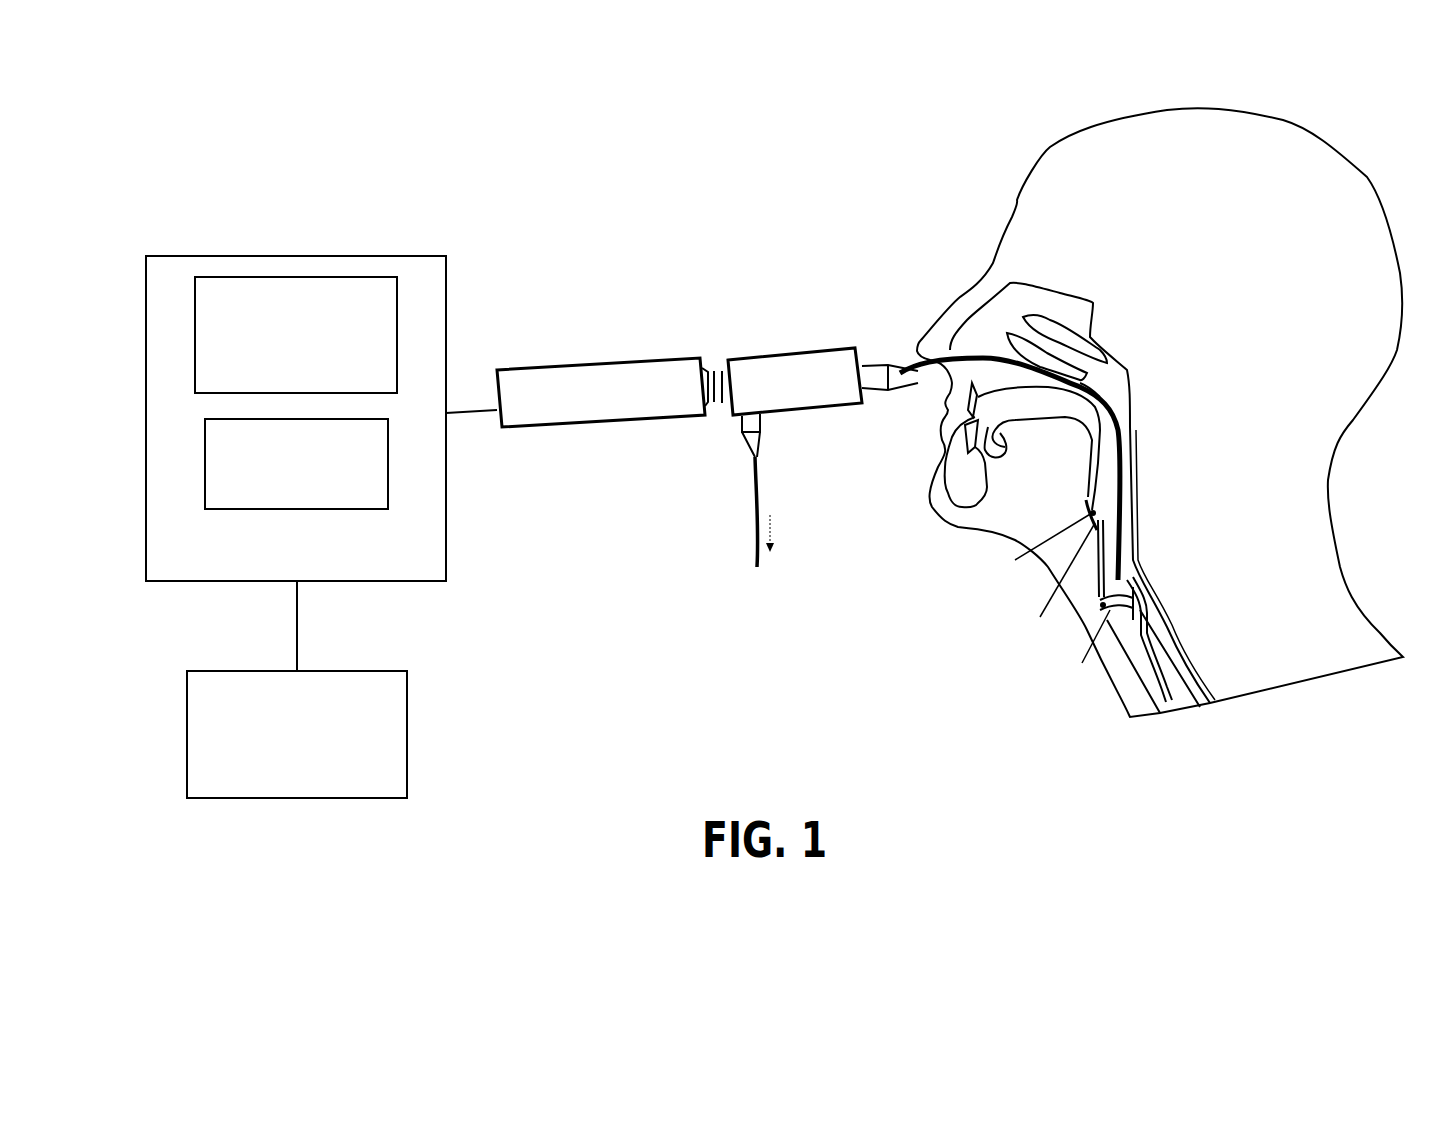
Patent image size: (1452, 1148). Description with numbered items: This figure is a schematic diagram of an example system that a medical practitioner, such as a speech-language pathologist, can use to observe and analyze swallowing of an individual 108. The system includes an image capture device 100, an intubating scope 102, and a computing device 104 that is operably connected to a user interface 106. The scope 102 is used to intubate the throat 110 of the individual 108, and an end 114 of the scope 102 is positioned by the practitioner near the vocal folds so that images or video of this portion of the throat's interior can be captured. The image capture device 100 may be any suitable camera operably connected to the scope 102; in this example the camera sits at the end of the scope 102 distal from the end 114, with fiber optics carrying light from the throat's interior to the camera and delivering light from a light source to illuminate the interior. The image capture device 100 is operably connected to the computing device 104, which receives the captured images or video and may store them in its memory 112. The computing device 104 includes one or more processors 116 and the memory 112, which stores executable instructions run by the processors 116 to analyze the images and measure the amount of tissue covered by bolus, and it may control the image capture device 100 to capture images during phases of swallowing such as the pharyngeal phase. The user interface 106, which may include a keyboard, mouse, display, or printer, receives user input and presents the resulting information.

The image capture device 100 is at (590, 362).
The intubating scope 102 is at (777, 353).
The computing device 104 is at (315, 573).
The user interface 106 is at (315, 774).
The individual 108 is at (1017, 198).
The throat 110 is at (1137, 562).
The memory 112 is at (313, 489).
The end of the scope 114 is at (1133, 577).
The processors 116 is at (315, 360).